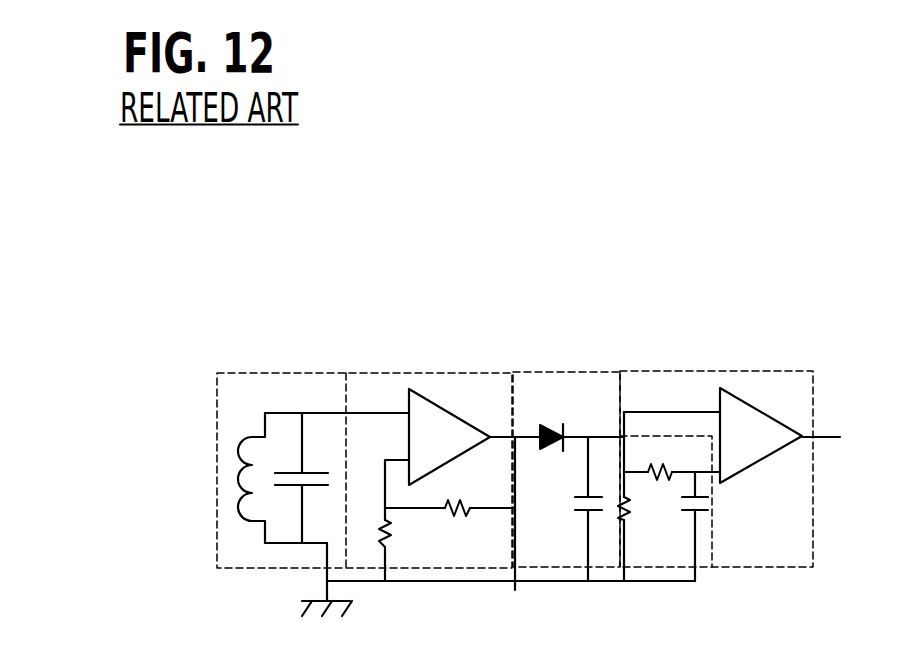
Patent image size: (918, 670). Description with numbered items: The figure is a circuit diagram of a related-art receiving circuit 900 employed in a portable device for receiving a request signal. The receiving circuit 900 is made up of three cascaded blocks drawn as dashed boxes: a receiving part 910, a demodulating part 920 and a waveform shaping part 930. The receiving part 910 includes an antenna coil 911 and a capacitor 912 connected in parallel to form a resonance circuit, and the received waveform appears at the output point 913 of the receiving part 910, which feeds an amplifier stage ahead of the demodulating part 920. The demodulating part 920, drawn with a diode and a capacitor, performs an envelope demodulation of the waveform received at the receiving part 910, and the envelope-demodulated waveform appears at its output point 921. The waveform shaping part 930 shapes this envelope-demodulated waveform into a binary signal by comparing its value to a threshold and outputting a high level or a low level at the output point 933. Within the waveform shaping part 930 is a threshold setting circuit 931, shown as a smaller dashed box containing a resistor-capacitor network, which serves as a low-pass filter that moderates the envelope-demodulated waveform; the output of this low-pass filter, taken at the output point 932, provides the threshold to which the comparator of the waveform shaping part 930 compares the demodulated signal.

The receiving circuit 900 is at (267, 285).
The receiving part 910 is at (303, 371).
The antenna coil 911 is at (247, 437).
The capacitor 912 is at (314, 470).
The output point of the receiving part 913 is at (346, 413).
The demodulating part 920 is at (590, 371).
The output point of the demodulating part 921 is at (588, 437).
The waveform shaping part 930 is at (765, 371).
The threshold setting circuit 931 is at (713, 540).
The output point of the threshold setting circuit 932 is at (698, 473).
The output point of the waveform shaping part 933 is at (823, 437).